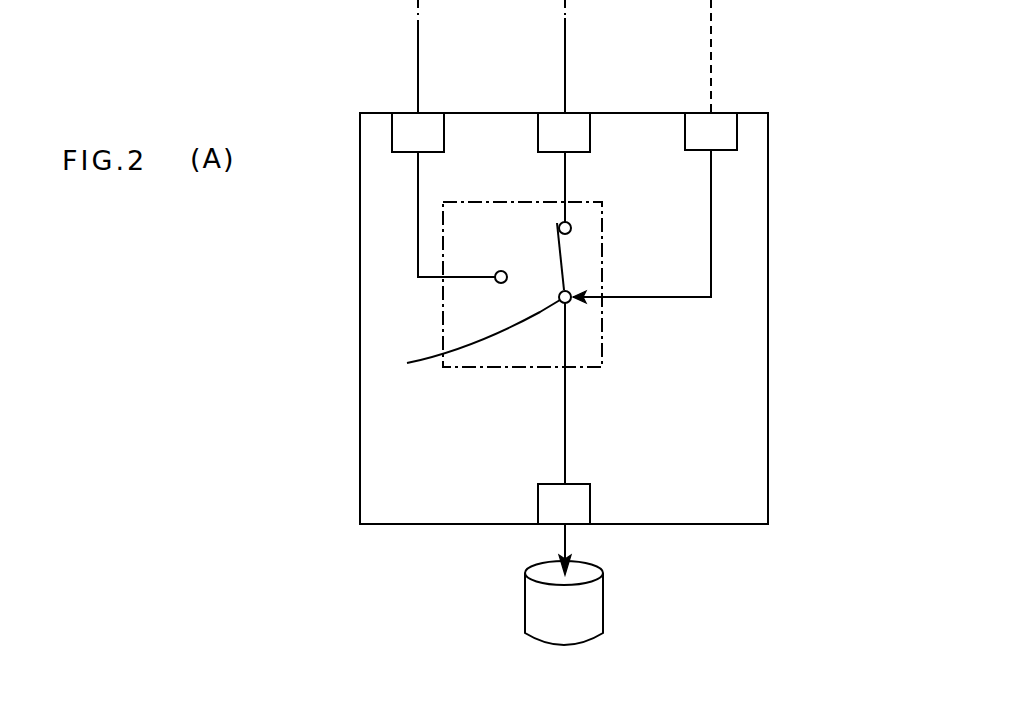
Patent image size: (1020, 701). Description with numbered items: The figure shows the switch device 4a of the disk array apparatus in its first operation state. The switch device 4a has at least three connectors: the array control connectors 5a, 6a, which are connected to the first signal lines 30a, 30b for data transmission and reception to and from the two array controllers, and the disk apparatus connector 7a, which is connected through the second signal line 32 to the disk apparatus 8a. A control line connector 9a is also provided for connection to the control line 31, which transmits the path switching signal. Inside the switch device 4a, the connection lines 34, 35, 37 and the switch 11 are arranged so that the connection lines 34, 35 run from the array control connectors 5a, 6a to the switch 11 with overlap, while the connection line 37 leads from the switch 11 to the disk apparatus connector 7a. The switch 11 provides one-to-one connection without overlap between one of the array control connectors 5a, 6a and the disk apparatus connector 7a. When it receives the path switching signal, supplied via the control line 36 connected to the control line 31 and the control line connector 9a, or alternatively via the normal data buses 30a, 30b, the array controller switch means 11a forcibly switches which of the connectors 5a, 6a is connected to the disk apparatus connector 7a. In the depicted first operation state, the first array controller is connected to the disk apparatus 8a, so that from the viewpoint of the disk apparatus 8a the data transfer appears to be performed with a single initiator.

The switch device 4a is at (768, 359).
The first signal line 30a is at (418, 35).
The first signal line 30b is at (565, 33).
The control line 31 is at (711, 33).
The array control connector 5a is at (433, 113).
The array control connector 6a is at (580, 113).
The control line connector 9a is at (724, 113).
The connection line 34 is at (418, 212).
The connection line 35 is at (565, 183).
The control line 36 is at (711, 250).
The switch 11 is at (443, 315).
The array controller switch means 11a is at (417, 357).
The connection line 37 is at (565, 445).
The second signal line 32 is at (562, 547).
The disk apparatus connector 7a is at (590, 503).
The disk apparatus 8a is at (603, 615).